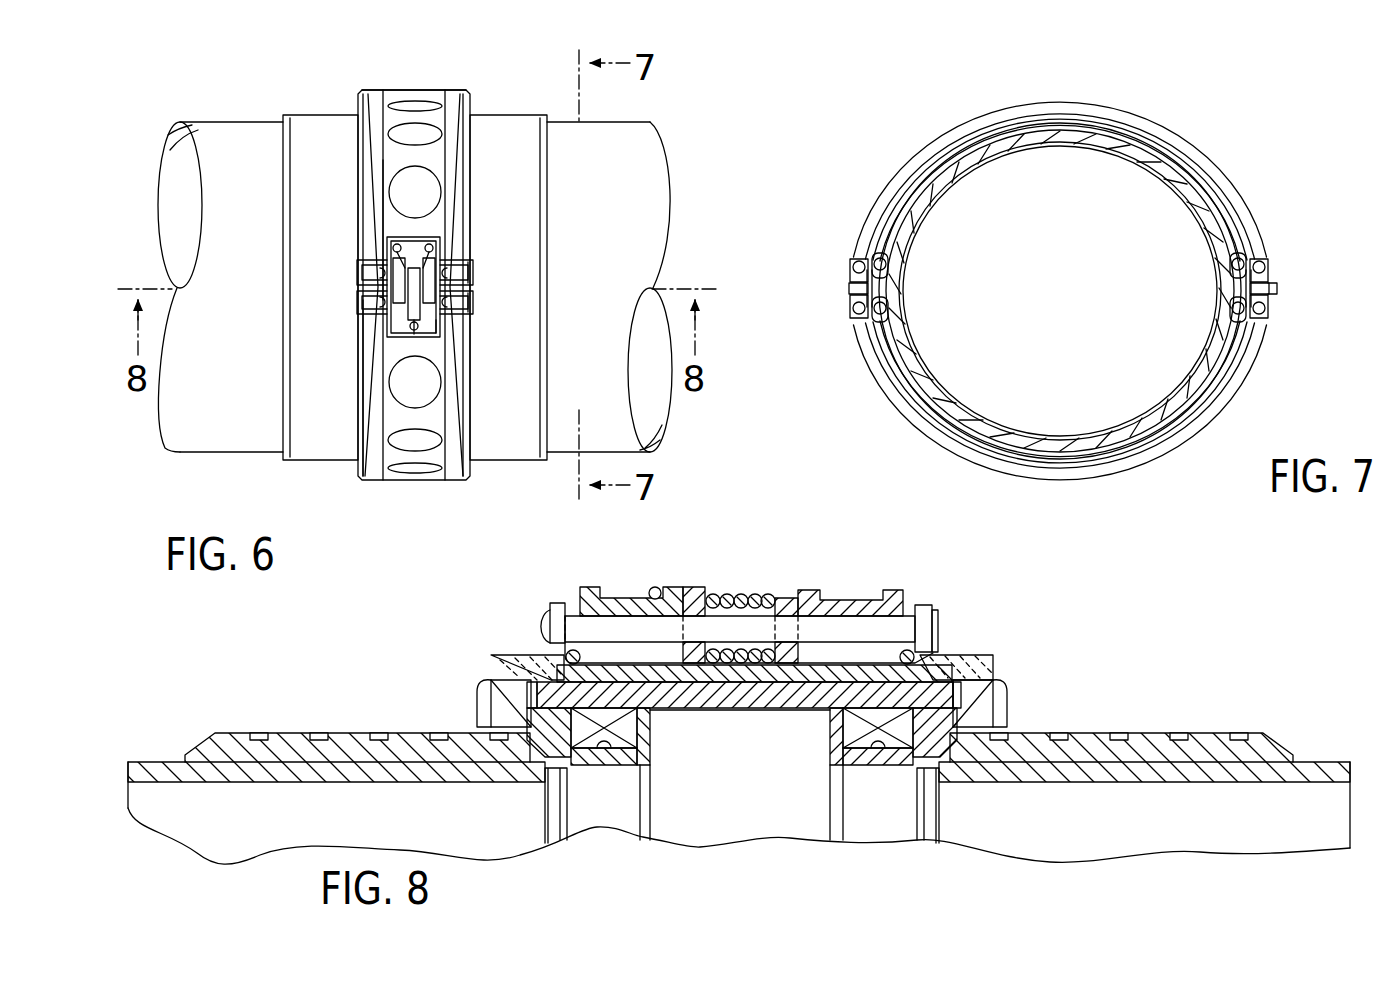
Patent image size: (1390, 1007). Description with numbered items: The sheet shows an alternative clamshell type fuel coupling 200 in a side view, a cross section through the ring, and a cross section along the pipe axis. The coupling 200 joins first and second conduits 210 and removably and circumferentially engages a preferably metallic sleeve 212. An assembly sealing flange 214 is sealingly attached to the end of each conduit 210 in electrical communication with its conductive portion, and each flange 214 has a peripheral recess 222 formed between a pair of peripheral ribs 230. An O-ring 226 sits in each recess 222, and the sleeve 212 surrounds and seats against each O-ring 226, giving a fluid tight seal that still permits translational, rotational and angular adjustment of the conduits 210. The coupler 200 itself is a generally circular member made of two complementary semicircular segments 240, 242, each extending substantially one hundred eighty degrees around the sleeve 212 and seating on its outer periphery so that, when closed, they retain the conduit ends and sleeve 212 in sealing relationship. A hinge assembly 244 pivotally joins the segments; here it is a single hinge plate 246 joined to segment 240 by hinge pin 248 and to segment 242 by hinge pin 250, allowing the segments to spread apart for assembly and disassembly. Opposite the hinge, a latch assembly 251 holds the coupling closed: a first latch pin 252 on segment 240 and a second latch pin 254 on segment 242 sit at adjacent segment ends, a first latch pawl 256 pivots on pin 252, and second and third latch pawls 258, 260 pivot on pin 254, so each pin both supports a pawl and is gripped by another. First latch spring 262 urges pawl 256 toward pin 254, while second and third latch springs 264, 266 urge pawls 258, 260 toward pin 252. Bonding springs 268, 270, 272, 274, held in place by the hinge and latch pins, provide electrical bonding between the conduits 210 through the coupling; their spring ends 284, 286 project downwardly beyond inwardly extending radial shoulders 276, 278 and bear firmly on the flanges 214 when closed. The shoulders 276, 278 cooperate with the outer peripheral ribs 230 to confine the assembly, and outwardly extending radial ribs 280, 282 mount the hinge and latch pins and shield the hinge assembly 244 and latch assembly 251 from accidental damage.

In FIG. 6, the coupling 200 is at (432, 82).
In FIG. 6, the conduit 210 is at (218, 153).
In FIG. 7, the conduit 210 is at (955, 159).
In FIG. 8, the conduit 210 is at (175, 762).
In FIG. 8, the sleeve 212 is at (750, 710).
In FIG. 6, the assembly sealing flange 214 is at (328, 442).
In FIG. 7, the assembly sealing flange 214 is at (1076, 120).
In FIG. 8, the assembly sealing flange 214 is at (250, 733).
In FIG. 8, the peripheral recess 222 is at (604, 750).
In FIG. 8, the O-ring 226 is at (650, 726).
In FIG. 8, the peripheral rib 230 is at (555, 752).
In FIG. 6, the semicircular segment 240 is at (375, 473).
In FIG. 7, the semicircular segment 240 is at (968, 455).
In FIG. 8, the semicircular segment 240 is at (975, 660).
In FIG. 6, the semicircular segment 242 is at (373, 102).
In FIG. 7, the semicircular segment 242 is at (1189, 157).
In FIG. 7, the hinge assembly 244 is at (1293, 272).
In FIG. 7, the hinge plate 246 is at (1272, 286).
In FIG. 7, the hinge pin 248 is at (1264, 317).
In FIG. 7, the hinge pin 250 is at (1261, 261).
In FIG. 6, the latch assembly 251 is at (332, 286).
In FIG. 7, the latch assembly 251 is at (832, 285).
In FIG. 8, the latch assembly 251 is at (975, 576).
In FIG. 6, the first latch pin 252 is at (373, 303).
In FIG. 7, the first latch pin 252 is at (857, 309).
In FIG. 8, the first latch pin 252 is at (938, 620).
In FIG. 6, the second latch pin 254 is at (383, 268).
In FIG. 7, the second latch pin 254 is at (857, 267).
In FIG. 6, the first latch pawl 256 is at (452, 260).
In FIG. 8, the first latch pawl 256 is at (707, 598).
In FIG. 6, the second latch pawl 258 is at (443, 315).
In FIG. 8, the second latch pawl 258 is at (806, 598).
In FIG. 6, the third latch pawl 260 is at (393, 320).
In FIG. 8, the third latch pawl 260 is at (659, 588).
In FIG. 8, the first latch spring 262 is at (756, 598).
In FIG. 6, the second latch spring 264 is at (432, 252).
In FIG. 8, the second latch spring 264 is at (878, 590).
In FIG. 6, the third latch spring 266 is at (403, 243).
In FIG. 6, the bonding spring 268 is at (478, 298).
In FIG. 7, the bonding spring 268 is at (884, 313).
In FIG. 8, the bonding spring 268 is at (990, 688).
In FIG. 6, the bonding spring 270 is at (477, 270).
In FIG. 7, the bonding spring 270 is at (884, 268).
In FIG. 7, the bonding spring 272 is at (1230, 309).
In FIG. 7, the bonding spring 274 is at (1230, 265).
In FIG. 7, the radial shoulder 276 is at (999, 113).
In FIG. 8, the radial shoulder 276 is at (930, 735).
In FIG. 8, the radial shoulder 278 is at (525, 666).
In FIG. 6, the radial rib 280 is at (443, 332).
In FIG. 7, the radial rib 280 is at (1249, 365).
In FIG. 8, the radial rib 280 is at (553, 603).
In FIG. 6, the radial rib 282 is at (377, 200).
In FIG. 7, the radial rib 282 is at (870, 222).
In FIG. 8, the radial rib 282 is at (647, 590).
In FIG. 8, the spring end 284 is at (990, 704).
In FIG. 8, the spring end 286 is at (491, 704).